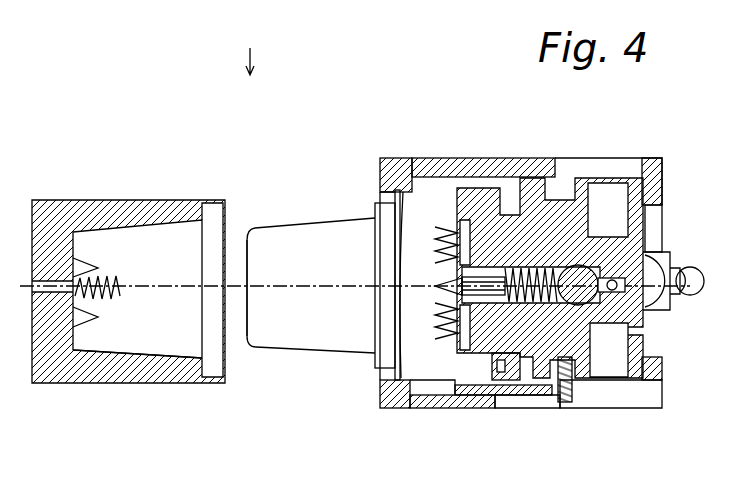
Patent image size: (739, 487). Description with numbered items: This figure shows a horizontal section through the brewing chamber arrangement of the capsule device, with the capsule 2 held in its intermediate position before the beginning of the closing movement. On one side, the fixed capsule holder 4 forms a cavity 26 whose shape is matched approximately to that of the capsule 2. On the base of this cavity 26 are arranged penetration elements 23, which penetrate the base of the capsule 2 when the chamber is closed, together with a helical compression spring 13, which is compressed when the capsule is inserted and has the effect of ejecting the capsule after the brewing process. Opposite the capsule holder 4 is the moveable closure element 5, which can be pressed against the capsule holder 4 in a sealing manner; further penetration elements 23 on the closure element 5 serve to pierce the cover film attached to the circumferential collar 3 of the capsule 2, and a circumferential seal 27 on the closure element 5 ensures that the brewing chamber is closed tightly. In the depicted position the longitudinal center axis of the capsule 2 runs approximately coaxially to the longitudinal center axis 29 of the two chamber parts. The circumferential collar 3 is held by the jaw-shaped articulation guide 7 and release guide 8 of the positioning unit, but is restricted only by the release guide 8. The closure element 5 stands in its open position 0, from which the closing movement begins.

The open position 0 is at (246, 47).
The capsule 2 is at (300, 238).
The circumferential collar 3 is at (383, 195).
The capsule holder 4 is at (108, 200).
The closure element 5 is at (470, 160).
The articulation guide 7 is at (405, 158).
The release guide 8 is at (405, 400).
The helical compression spring 13 is at (120, 273).
The penetration elements 23 is at (82, 257).
The cavity 26 is at (152, 385).
The circumferential seal 27 is at (465, 400).
The longitudinal center axis 29 is at (310, 287).